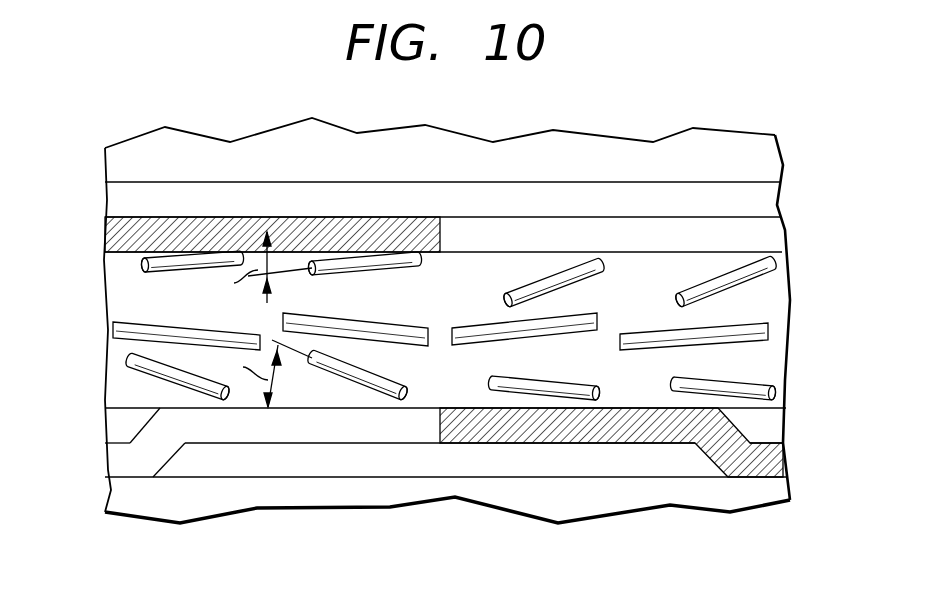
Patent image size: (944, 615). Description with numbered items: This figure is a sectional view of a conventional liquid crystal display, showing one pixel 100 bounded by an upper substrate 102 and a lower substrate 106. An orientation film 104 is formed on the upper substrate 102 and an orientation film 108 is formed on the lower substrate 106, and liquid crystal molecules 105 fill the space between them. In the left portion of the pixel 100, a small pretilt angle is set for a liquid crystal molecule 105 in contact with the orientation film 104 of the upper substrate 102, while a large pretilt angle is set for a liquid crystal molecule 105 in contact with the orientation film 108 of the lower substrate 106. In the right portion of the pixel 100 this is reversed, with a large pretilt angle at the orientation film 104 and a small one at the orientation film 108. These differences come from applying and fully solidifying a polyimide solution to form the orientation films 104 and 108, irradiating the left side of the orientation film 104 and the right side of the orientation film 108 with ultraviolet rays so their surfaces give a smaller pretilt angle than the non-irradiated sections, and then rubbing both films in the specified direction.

The pixel 100 is at (765, 538).
The upper substrate 102 is at (752, 157).
The orientation film 104 is at (768, 230).
The liquid crystal molecule 105 is at (118, 333).
The lower substrate 106 is at (768, 493).
The orientation film 108 is at (783, 452).